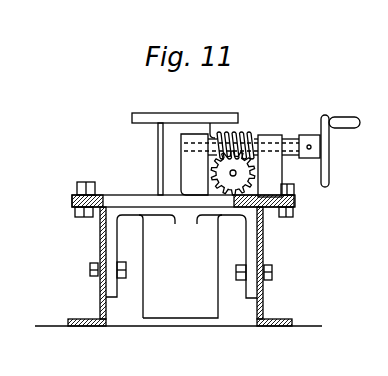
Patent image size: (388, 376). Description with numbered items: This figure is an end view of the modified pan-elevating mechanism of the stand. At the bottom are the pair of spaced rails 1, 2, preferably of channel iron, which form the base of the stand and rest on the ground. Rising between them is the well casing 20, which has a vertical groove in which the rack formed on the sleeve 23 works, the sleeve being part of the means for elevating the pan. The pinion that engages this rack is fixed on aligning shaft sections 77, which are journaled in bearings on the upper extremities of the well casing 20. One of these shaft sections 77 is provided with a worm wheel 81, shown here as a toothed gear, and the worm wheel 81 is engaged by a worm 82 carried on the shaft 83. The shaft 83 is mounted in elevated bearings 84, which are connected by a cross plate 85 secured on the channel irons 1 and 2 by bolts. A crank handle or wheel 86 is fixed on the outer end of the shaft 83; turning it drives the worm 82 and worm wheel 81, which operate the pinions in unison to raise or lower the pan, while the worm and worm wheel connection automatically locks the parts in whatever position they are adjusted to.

The channel iron rail 1 is at (100, 296).
The channel iron rail 2 is at (263, 296).
The well casing 20 is at (143, 307).
The sleeve 23 is at (156, 130).
The shaft section 77 is at (233, 177).
The worm wheel 81 is at (293, 202).
The worm 82 is at (237, 131).
The shaft 83 is at (291, 139).
The elevated bearing 84 is at (190, 165).
The cross plate 85 is at (104, 195).
The crank handle or wheel 86 is at (329, 148).